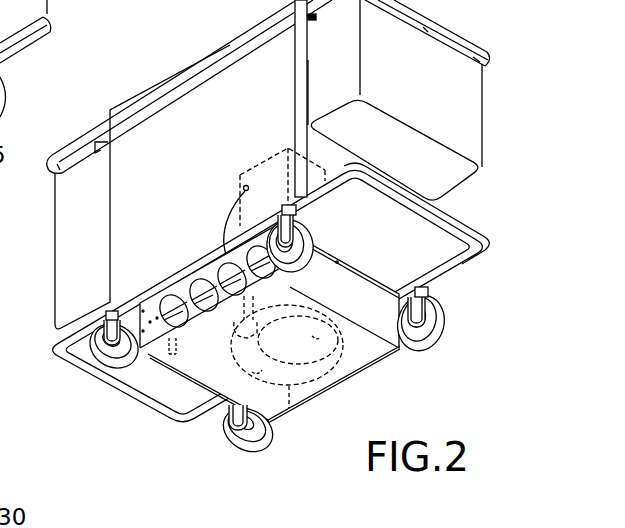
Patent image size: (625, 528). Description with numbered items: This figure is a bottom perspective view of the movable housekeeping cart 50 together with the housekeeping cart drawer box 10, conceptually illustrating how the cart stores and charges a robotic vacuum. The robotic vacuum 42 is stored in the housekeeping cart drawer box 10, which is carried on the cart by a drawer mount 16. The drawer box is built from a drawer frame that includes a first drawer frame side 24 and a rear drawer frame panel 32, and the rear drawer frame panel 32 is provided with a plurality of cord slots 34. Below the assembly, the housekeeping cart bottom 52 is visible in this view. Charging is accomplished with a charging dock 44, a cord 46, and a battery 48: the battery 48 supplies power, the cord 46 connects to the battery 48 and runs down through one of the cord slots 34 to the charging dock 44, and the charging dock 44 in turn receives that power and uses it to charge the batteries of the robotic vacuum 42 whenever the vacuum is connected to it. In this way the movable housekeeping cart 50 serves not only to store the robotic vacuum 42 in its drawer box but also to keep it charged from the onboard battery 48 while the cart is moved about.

The housekeeping cart drawer box 10 is at (245, 230).
The drawer mount 16 is at (181, 356).
The first drawer frame side 24 is at (352, 278).
The rear drawer frame panel 32 is at (207, 284).
The cord slots 34 is at (198, 282).
The robotic vacuum 42 is at (295, 409).
The charging dock 44 is at (276, 368).
The cord 46 is at (220, 224).
The battery 48 is at (260, 163).
The movable housekeeping cart 50 is at (57, 242).
The housekeeping cart bottom 52 is at (173, 412).